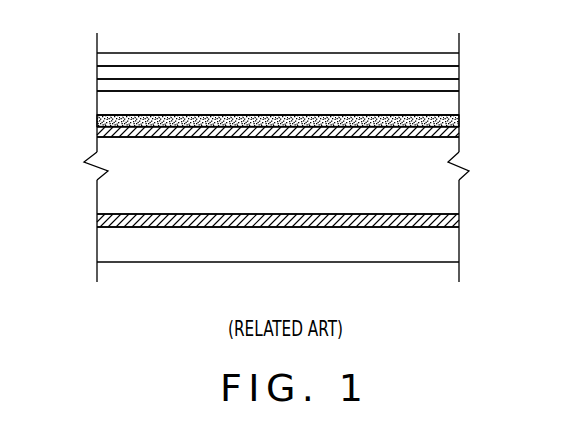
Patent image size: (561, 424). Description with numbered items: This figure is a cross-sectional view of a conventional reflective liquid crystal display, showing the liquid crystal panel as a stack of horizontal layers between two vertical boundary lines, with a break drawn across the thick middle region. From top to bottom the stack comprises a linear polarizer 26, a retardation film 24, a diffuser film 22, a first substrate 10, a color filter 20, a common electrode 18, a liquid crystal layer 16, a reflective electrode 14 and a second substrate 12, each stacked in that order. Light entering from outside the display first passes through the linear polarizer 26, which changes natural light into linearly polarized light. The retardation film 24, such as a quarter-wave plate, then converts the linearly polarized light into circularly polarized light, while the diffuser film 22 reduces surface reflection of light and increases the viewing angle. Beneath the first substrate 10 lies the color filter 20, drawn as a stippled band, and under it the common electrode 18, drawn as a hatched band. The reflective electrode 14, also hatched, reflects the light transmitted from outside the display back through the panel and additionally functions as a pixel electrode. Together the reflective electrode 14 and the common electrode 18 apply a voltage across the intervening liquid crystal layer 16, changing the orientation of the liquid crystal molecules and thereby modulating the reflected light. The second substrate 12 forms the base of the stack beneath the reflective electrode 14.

The first substrate 10 is at (459, 103).
The second substrate 12 is at (459, 247).
The reflective electrode 14 is at (459, 223).
The liquid crystal layer 16 is at (459, 195).
The common electrode 18 is at (459, 138).
The color filter 20 is at (97, 117).
The diffuser film 22 is at (459, 88).
The retardation film 24 is at (459, 72).
The linear polarizer 26 is at (459, 60).